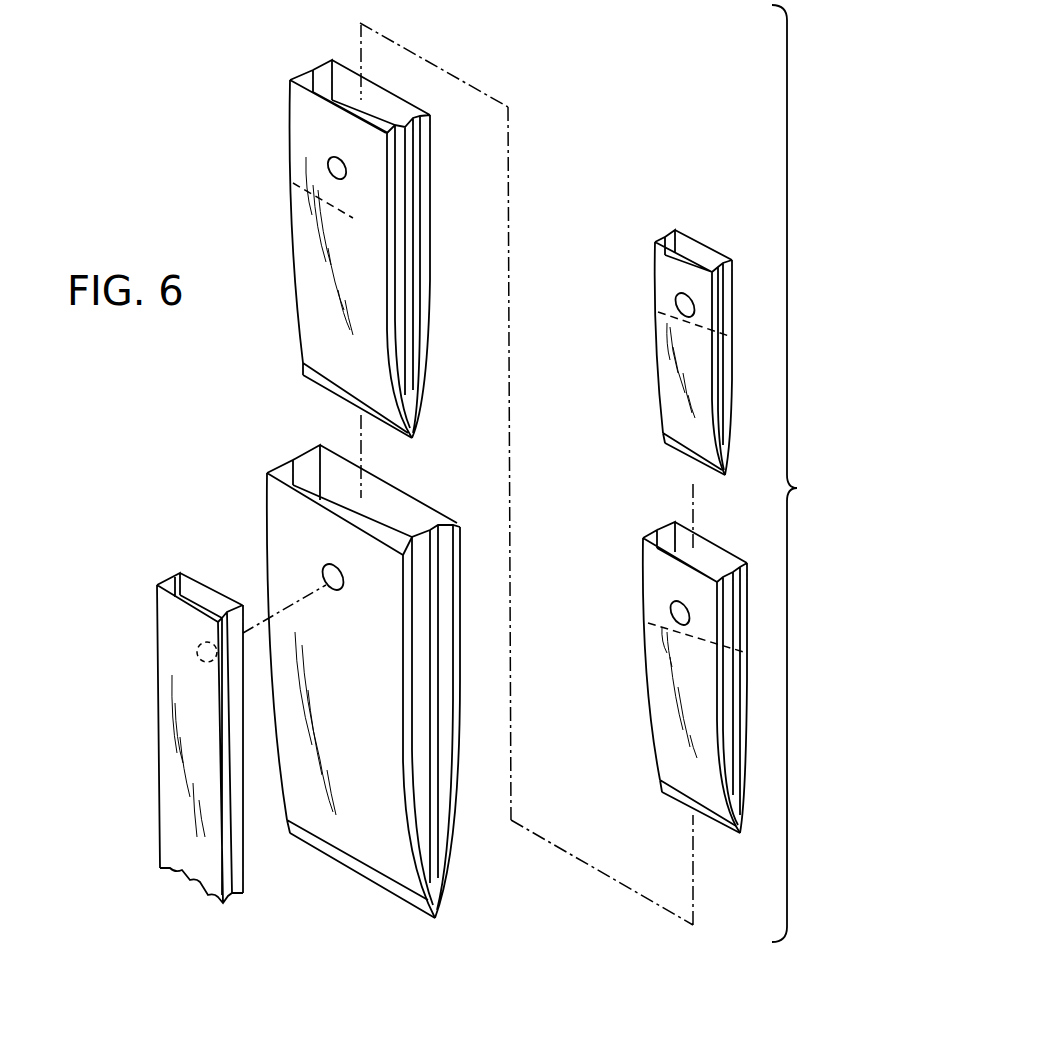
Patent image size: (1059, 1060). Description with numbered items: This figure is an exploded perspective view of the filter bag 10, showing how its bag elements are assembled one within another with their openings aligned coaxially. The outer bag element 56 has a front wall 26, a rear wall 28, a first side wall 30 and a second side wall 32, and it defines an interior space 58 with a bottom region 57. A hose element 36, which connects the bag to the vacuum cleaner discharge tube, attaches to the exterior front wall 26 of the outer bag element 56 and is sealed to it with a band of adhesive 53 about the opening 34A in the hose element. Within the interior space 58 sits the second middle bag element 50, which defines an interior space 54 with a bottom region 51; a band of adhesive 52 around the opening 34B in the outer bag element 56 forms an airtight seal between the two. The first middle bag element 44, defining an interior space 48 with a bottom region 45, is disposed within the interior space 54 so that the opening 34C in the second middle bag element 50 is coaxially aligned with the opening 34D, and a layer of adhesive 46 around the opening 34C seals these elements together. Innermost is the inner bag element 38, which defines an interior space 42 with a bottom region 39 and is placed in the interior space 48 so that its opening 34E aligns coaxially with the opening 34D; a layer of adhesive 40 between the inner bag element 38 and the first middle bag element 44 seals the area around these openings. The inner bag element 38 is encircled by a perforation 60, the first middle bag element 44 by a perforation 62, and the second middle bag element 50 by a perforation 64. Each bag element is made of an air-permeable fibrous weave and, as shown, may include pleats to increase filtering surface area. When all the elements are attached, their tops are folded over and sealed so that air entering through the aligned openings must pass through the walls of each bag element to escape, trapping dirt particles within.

The filter bag 10 is at (172, 505).
The front wall 26 is at (395, 807).
The rear wall 28 is at (395, 485).
The first side wall 30 is at (290, 467).
The second side wall 32 is at (447, 783).
The opening in hose element 34A is at (197, 652).
The opening in outer bag element 34B is at (340, 593).
The opening in second middle bag element 34C is at (333, 167).
The opening in first middle bag element 34D is at (673, 615).
The opening in inner bag element 34E is at (679, 304).
The hose element 36 is at (170, 807).
The inner bag element 38 is at (658, 370).
The bottom region 39 is at (676, 428).
The layer of adhesive 40 is at (677, 293).
The interior space 42 is at (693, 252).
The first middle bag element 44 is at (652, 675).
The bottom region 45 is at (673, 775).
The layer of adhesive 46 is at (675, 597).
The interior space 48 is at (710, 557).
The second middle bag element 50 is at (297, 227).
The bottom region 51 is at (310, 338).
The band of adhesive 52 is at (330, 158).
The band of adhesive 53 is at (328, 558).
The interior space 54 is at (393, 107).
The outer bag element 56 is at (268, 587).
The bottom region 57 is at (335, 835).
The interior space 58 is at (405, 515).
The perforation 60 is at (677, 322).
The perforation 62 is at (695, 655).
The perforation 64 is at (350, 217).